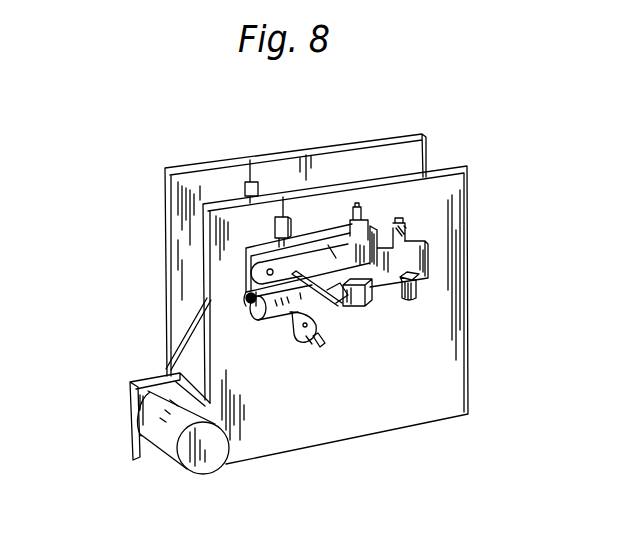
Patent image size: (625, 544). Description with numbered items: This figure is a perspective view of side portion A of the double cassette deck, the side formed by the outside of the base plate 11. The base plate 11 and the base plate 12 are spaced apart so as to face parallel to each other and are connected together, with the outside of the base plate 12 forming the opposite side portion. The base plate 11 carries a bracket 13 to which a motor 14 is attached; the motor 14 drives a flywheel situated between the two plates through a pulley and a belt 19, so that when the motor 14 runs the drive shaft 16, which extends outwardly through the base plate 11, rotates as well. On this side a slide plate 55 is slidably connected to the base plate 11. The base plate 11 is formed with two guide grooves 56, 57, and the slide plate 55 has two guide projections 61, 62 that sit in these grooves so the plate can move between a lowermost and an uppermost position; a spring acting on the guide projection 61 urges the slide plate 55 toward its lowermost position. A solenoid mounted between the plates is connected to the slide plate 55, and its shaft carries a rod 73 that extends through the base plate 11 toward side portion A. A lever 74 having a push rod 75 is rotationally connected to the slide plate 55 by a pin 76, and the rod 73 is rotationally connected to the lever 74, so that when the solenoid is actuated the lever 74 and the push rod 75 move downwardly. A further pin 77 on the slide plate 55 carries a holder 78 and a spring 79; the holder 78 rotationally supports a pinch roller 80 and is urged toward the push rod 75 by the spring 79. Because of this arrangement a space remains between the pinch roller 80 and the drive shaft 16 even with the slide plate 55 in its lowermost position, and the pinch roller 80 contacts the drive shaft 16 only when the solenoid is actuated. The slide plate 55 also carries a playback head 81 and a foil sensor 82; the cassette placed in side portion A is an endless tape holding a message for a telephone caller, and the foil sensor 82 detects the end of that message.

The base plate 11 is at (455, 198).
The base plate 12 is at (375, 157).
The bracket 13 is at (140, 444).
The motor 14 is at (221, 452).
The drive shaft 16 is at (310, 346).
The belt 19 is at (168, 360).
The slide plate 55 is at (430, 262).
The guide groove 56 is at (283, 222).
The guide groove 57 is at (405, 226).
The guide projection 61 is at (278, 237).
The guide projection 62 is at (406, 233).
The rod 73 is at (372, 228).
The lever 74 is at (336, 258).
The push rod 75 is at (336, 305).
The pin 76 is at (262, 272).
The pin 77 is at (270, 320).
The holder 78 is at (291, 328).
The spring 79 is at (250, 304).
The pinch roller 80 is at (322, 348).
The playback head 81 is at (363, 302).
The foil sensor 82 is at (413, 300).